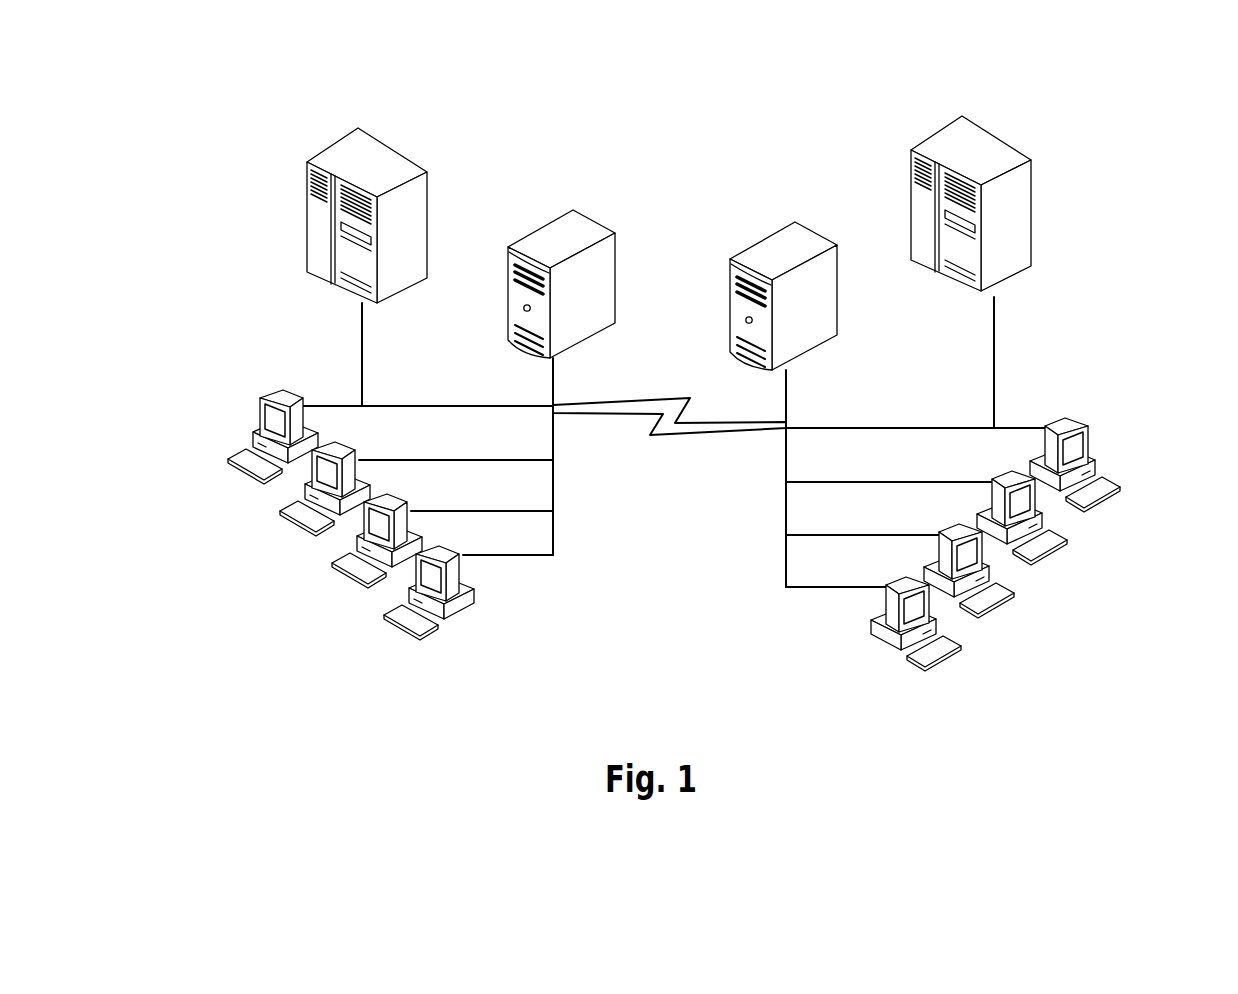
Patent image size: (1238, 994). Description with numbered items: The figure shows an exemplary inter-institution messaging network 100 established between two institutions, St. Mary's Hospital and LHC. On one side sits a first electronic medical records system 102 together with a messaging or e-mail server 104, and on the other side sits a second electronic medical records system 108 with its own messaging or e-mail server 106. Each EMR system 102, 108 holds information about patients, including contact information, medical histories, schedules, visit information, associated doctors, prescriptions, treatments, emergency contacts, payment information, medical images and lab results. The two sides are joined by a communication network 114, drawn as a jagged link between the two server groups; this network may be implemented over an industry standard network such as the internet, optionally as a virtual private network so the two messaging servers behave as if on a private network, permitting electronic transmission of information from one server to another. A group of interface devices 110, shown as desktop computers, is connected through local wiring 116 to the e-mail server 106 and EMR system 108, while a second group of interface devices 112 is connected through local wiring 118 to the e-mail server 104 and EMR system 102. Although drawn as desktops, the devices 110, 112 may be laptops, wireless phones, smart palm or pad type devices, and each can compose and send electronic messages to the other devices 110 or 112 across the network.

The inter-institution messaging network 100 is at (675, 82).
The electronic medical records system 102 is at (411, 210).
The messaging or e-mail server 104 is at (598, 259).
The messaging or e-mail server 106 is at (812, 262).
The electronic medical records system 108 is at (1022, 203).
The devices 110 is at (1035, 555).
The devices 112 is at (307, 531).
The communication network 114 is at (669, 436).
The local area network 116 is at (861, 442).
The local area network 118 is at (482, 429).